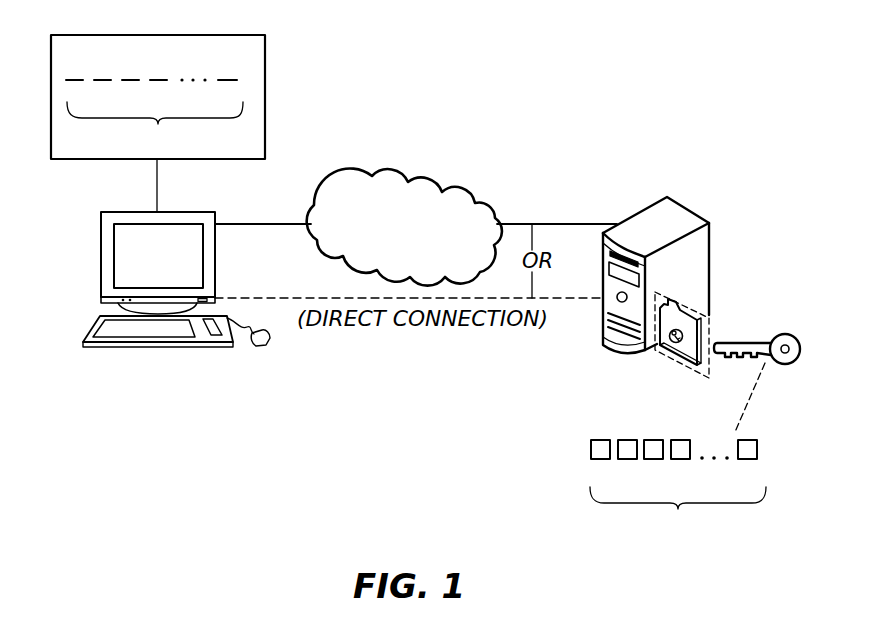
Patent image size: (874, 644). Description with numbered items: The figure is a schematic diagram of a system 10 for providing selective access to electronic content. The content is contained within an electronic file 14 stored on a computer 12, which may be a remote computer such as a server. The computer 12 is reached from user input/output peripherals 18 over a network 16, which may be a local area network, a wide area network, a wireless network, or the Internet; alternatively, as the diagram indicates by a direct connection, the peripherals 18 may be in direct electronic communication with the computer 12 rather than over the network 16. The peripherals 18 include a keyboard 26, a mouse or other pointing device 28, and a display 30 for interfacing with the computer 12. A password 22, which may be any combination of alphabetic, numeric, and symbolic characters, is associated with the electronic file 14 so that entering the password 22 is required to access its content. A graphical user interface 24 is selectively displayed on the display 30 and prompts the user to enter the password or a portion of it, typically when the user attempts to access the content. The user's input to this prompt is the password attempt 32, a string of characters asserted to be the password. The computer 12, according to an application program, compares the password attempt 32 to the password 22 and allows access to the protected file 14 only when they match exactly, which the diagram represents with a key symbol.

The system 10 is at (571, 114).
The computer 12 is at (675, 220).
The electronic file 14 is at (674, 309).
The network 16 is at (447, 192).
The user input/output peripherals 18 is at (81, 307).
The password 22 is at (678, 489).
The graphical user interface 24 is at (200, 97).
The keyboard 26 is at (122, 347).
The pointing device 28 is at (262, 350).
The display 30 is at (141, 246).
The password attempt 32 is at (154, 115).